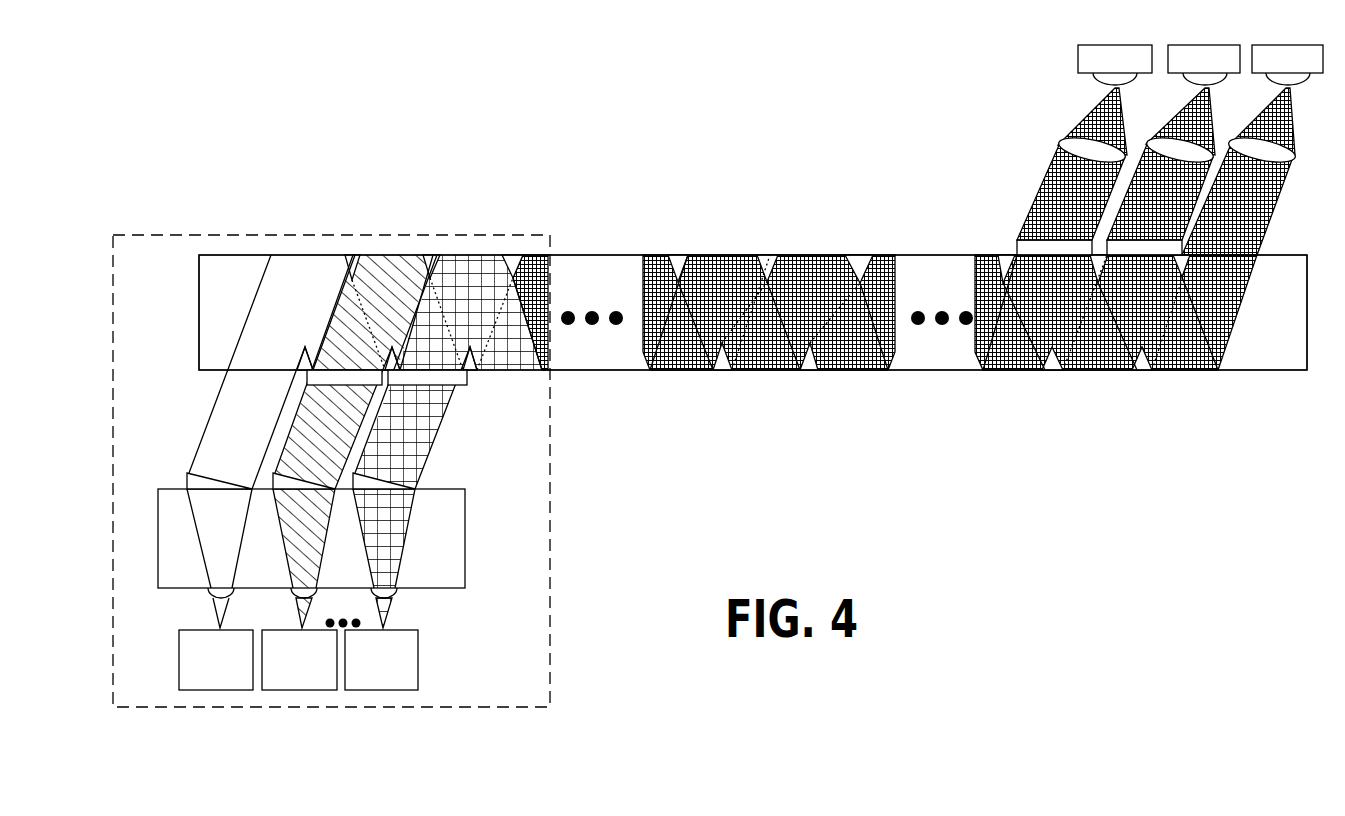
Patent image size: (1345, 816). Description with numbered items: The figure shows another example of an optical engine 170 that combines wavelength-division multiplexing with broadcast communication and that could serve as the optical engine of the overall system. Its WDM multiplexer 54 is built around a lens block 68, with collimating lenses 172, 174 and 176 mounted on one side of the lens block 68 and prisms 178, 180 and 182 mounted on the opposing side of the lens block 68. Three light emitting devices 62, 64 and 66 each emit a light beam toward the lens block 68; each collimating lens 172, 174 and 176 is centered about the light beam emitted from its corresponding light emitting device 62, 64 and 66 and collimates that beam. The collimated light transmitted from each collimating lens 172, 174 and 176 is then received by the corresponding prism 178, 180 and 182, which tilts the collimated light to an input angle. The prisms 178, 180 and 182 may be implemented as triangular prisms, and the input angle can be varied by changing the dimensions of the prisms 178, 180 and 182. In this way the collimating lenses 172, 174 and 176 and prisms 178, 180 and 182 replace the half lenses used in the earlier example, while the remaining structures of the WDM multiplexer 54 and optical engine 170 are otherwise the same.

The WDM multiplexer 54 is at (322, 235).
The light emitting device 62 is at (215, 690).
The light emitting device 64 is at (303, 690).
The light emitting device 66 is at (387, 690).
The lens block 68 is at (465, 551).
The optical engine 170 is at (514, 151).
The collimating lens 172 is at (208, 596).
The collimating lens 174 is at (294, 600).
The collimating lens 176 is at (393, 600).
The prism 178 is at (188, 477).
The prism 180 is at (273, 476).
The prism 182 is at (405, 484).